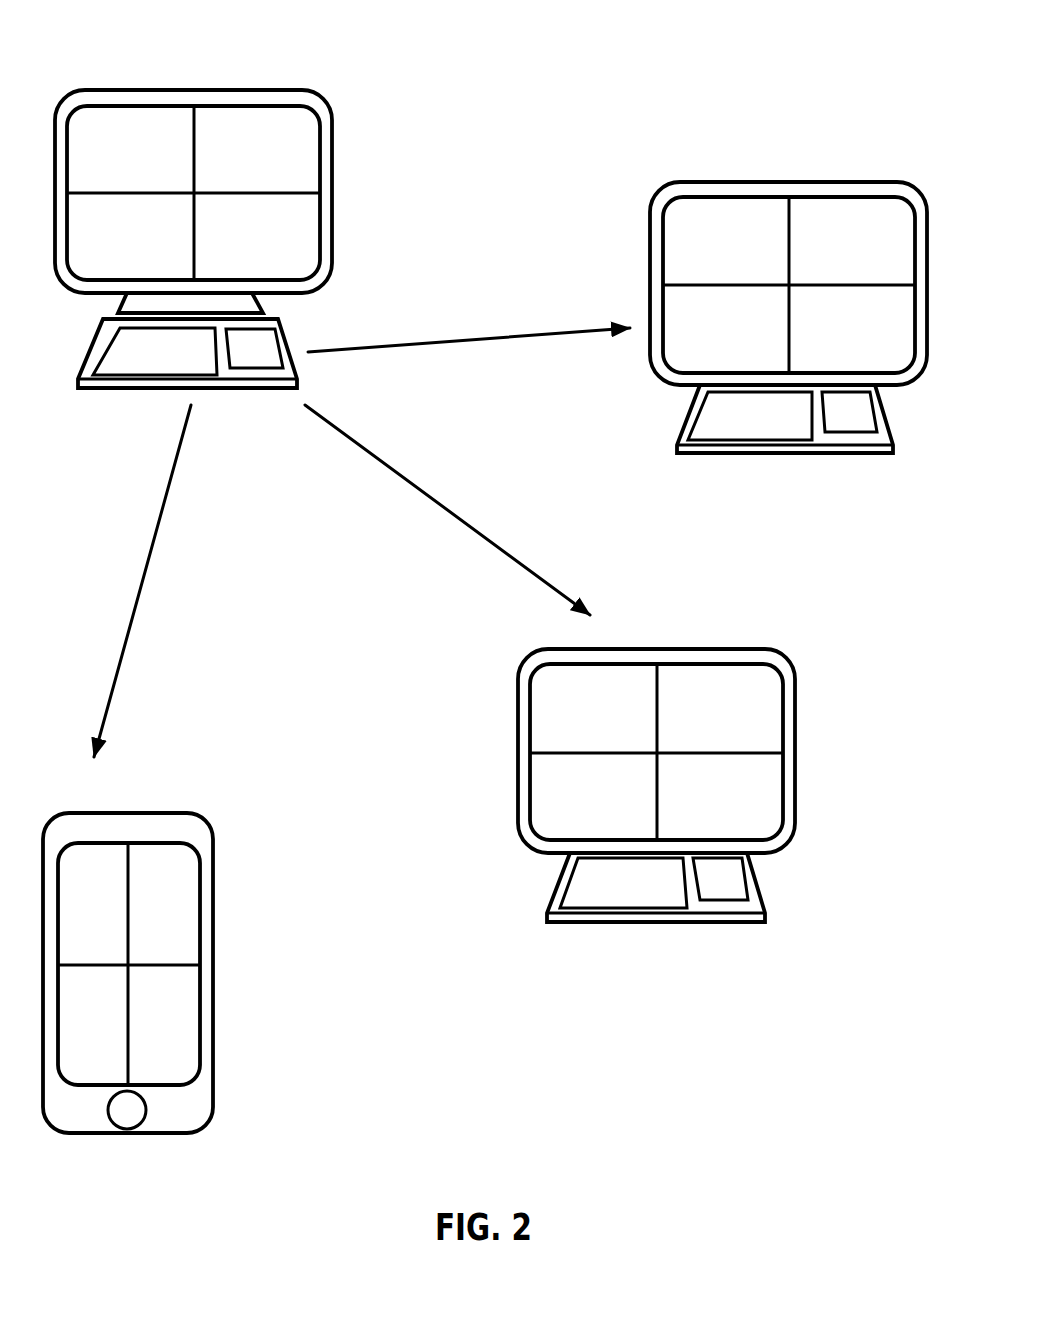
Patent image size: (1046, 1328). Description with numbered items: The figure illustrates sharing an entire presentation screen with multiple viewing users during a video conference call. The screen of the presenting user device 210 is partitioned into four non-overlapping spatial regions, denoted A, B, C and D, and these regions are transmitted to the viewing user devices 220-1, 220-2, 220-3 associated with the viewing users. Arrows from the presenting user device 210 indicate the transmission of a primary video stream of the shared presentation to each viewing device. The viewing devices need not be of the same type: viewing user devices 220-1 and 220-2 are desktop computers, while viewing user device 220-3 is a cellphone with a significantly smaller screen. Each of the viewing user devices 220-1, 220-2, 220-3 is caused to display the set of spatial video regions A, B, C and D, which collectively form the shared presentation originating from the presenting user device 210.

The presenting user device 210 is at (264, 86).
The viewing user device 220-1 is at (836, 176).
The viewing user device 220-2 is at (711, 643).
The viewing user device 220-3 is at (123, 807).